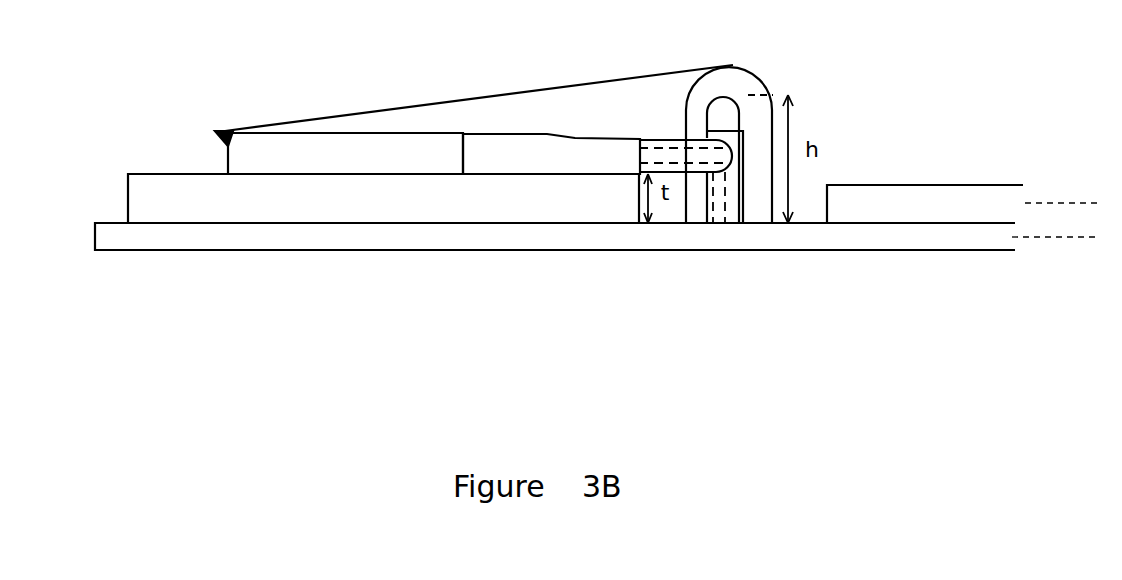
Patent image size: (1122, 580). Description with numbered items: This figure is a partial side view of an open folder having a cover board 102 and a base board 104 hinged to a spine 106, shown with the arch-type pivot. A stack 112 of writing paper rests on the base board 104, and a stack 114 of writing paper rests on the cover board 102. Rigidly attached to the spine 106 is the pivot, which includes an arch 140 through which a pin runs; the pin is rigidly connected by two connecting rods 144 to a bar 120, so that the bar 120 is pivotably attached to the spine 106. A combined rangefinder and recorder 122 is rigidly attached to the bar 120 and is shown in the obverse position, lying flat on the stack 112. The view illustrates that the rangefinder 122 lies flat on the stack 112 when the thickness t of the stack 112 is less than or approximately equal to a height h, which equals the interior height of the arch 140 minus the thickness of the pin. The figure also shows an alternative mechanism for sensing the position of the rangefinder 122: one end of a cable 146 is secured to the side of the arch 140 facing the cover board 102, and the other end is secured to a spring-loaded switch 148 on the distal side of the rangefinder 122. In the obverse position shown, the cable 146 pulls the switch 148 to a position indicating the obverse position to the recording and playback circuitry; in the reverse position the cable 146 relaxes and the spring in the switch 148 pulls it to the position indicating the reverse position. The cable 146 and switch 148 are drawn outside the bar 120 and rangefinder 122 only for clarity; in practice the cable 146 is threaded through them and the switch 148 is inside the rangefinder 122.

The cover board 102 is at (892, 250).
The base board 104 is at (353, 250).
The spine 106 is at (728, 253).
The stack of writing paper 112 is at (383, 198).
The stack of writing paper 114 is at (972, 197).
The bar 120 is at (551, 154).
The combined rangefinder and recorder 122 is at (345, 153).
The arch 140 is at (737, 85).
The connecting rods 144 is at (663, 150).
The cable 146 is at (545, 90).
The spring-loaded switch 148 is at (225, 147).